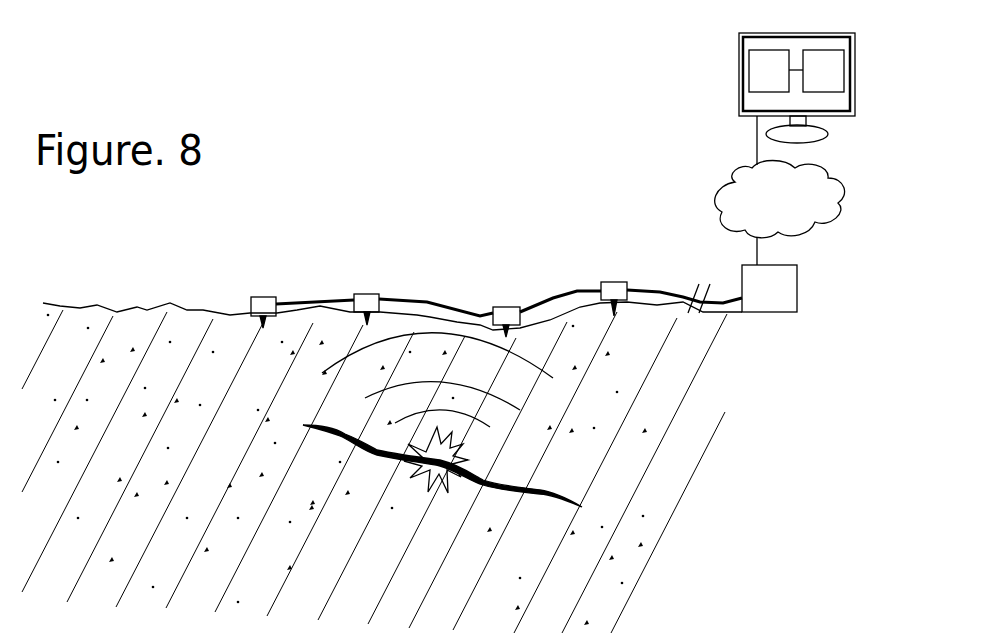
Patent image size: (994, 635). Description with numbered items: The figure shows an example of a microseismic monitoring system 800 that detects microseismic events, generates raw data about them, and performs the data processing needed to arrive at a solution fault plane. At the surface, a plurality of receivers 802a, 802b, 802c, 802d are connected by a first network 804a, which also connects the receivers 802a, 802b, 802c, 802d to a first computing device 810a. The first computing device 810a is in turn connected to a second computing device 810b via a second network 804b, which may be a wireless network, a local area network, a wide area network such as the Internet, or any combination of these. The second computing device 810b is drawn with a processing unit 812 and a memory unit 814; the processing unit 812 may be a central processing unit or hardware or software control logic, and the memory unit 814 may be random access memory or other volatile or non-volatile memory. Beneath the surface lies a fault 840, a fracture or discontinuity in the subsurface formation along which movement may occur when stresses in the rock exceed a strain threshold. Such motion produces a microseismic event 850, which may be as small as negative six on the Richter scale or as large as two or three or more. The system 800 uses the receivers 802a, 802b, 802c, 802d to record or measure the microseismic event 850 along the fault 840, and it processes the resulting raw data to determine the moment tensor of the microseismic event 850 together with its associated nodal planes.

The microseismic monitoring system 800 is at (514, 212).
The receiver 802a is at (262, 297).
The receiver 802b is at (368, 294).
The receiver 802c is at (503, 307).
The receiver 802d is at (613, 282).
The first network 804a is at (288, 302).
The second network 804b is at (800, 213).
The first computing device 810a is at (785, 265).
The second computing device 810b is at (797, 84).
The processing unit 812 is at (769, 71).
The memory unit 814 is at (823, 71).
The fault 840 is at (540, 490).
The microseismic event 850 is at (465, 452).